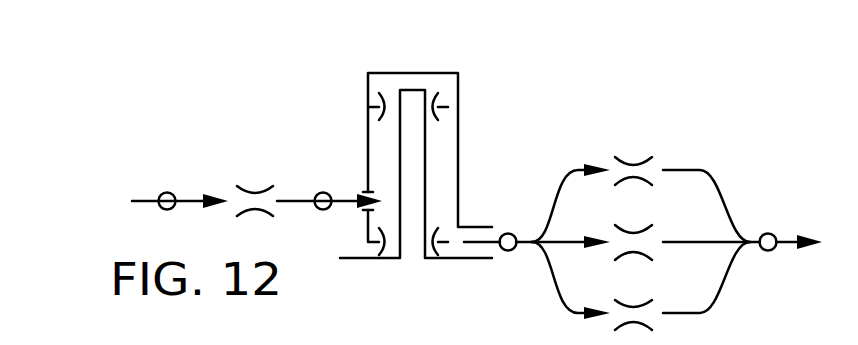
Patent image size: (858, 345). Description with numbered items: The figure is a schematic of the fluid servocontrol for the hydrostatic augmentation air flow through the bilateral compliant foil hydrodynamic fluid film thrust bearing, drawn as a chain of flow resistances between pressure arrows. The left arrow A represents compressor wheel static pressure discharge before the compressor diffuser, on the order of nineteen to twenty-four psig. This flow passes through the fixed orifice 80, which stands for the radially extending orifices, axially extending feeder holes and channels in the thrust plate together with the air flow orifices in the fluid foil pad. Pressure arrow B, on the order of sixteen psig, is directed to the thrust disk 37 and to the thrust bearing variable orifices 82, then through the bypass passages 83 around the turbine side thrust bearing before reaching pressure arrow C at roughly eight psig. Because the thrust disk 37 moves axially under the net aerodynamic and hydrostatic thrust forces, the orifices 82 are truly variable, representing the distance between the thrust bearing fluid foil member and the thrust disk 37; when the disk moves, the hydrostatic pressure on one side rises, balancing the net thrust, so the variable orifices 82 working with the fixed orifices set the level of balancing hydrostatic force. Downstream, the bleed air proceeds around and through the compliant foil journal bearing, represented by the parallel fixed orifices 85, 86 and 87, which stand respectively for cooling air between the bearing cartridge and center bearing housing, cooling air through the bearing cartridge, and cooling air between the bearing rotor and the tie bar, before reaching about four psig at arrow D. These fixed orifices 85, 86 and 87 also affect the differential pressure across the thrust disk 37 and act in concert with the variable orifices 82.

The thrust disk 37 is at (407, 90).
The fixed orifice 80 is at (253, 192).
The thrust bearing variable orifices 82 is at (393, 108).
The bypass passages 83 is at (452, 104).
The fixed orifice 85 is at (632, 163).
The fixed orifice 86 is at (632, 236).
The fixed orifice 87 is at (643, 302).
The pressure arrow A is at (166, 193).
The pressure arrow B is at (322, 193).
The pressure arrow C is at (506, 234).
The pressure arrow D is at (766, 235).